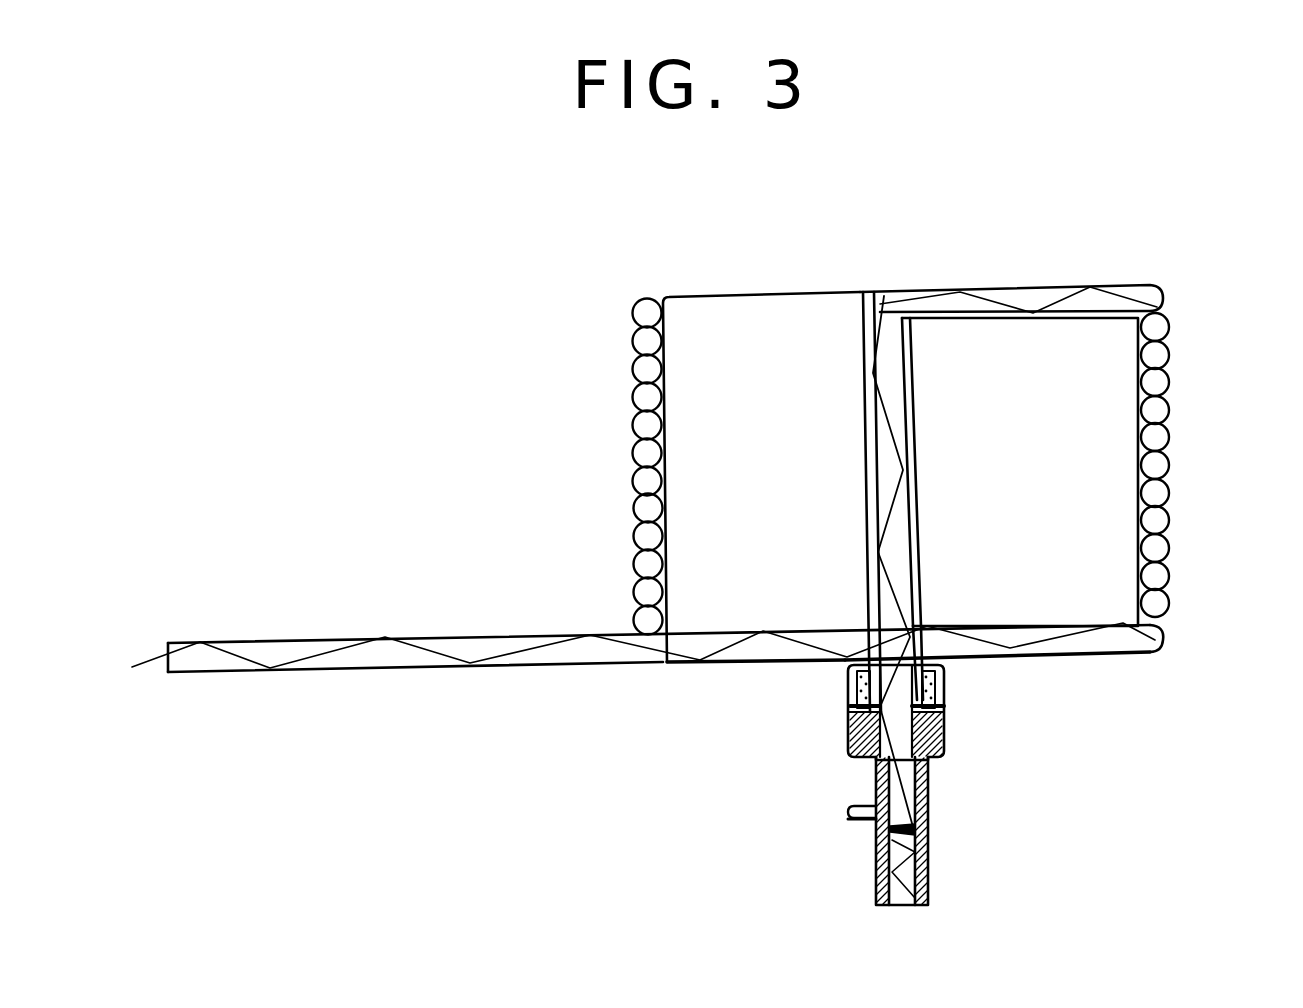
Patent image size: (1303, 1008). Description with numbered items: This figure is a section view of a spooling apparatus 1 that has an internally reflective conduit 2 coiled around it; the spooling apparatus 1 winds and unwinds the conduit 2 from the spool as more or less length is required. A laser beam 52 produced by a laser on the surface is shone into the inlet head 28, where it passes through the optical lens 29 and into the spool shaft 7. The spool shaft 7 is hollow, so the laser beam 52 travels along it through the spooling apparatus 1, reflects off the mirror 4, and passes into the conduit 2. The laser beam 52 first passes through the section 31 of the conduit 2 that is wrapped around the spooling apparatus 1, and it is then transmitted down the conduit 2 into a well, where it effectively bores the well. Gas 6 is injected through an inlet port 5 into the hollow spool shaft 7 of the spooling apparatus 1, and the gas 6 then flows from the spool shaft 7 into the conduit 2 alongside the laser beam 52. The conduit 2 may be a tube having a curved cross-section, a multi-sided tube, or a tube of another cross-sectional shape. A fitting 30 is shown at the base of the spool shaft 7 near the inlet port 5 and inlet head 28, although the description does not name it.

The spooling apparatus 1 is at (733, 261).
The internally reflective conduit 2 is at (311, 638).
The mirror 4 is at (880, 308).
The inlet port 5 is at (848, 808).
The gas 6 is at (833, 818).
The spool shaft 7 is at (920, 573).
The inlet head 28 is at (924, 882).
The optical lens 29 is at (918, 830).
The holder 30 is at (953, 718).
The section of the conduit 31 is at (1160, 326).
The laser beam 52 is at (893, 514).